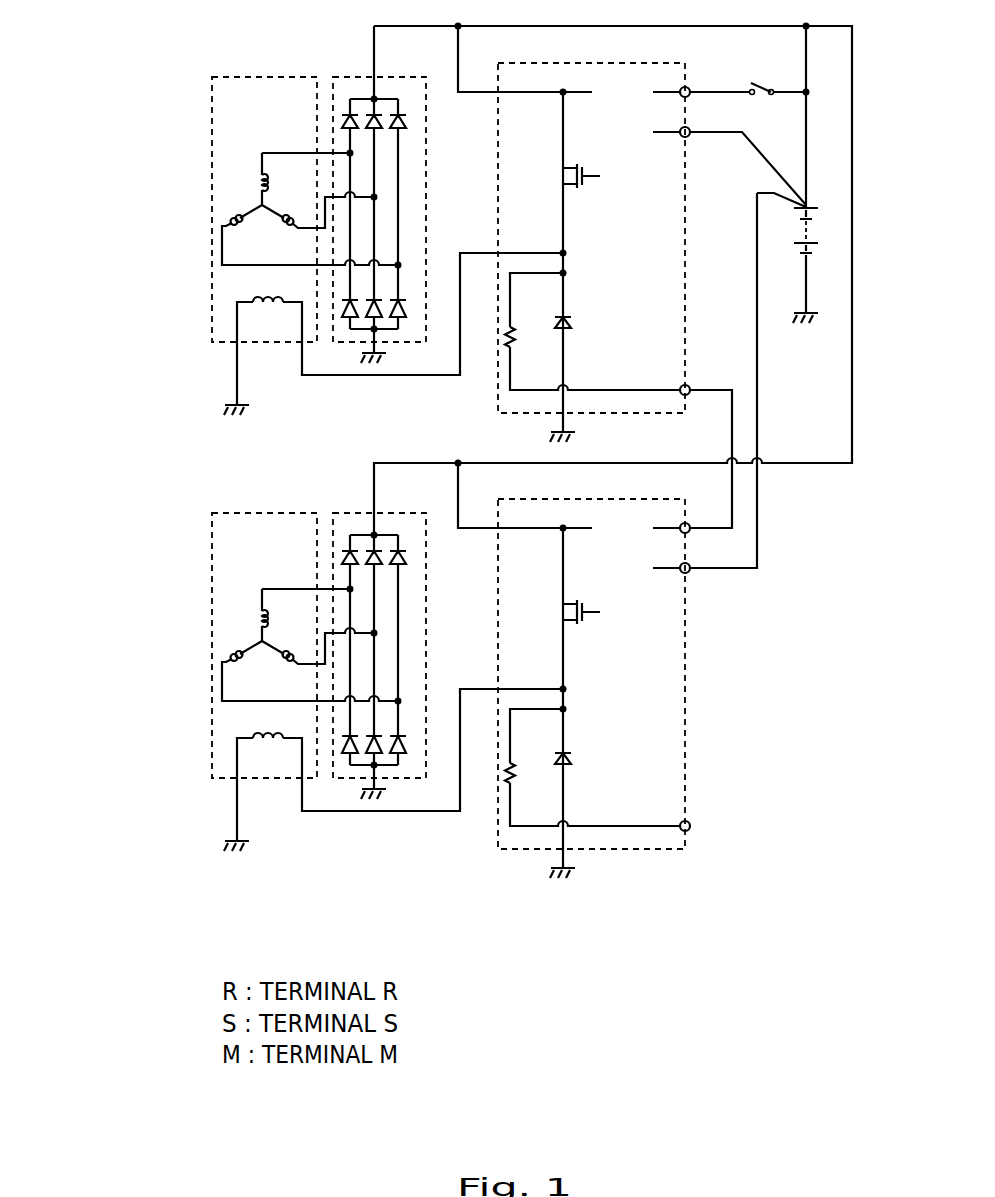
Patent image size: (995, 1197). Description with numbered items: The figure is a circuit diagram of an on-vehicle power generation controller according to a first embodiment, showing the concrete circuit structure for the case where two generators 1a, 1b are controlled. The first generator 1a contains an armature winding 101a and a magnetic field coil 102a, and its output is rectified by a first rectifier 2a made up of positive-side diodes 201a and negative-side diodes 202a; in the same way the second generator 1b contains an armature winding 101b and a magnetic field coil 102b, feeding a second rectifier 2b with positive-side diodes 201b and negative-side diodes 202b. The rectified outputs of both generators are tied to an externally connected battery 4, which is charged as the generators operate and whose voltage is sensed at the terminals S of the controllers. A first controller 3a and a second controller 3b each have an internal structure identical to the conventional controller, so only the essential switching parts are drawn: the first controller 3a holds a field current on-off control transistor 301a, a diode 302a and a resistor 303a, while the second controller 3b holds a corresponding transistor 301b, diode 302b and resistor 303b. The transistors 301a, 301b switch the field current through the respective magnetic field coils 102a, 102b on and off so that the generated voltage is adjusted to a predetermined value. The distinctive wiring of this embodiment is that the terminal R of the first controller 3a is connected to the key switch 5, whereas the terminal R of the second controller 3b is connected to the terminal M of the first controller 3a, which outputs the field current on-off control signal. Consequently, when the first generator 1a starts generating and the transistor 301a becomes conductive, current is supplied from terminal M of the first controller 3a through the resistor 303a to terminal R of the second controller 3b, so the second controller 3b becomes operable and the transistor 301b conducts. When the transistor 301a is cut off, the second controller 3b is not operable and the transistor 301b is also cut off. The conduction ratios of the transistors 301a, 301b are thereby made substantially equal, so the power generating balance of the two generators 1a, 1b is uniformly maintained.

The first generator 1a is at (308, 246).
The armature winding 101a is at (310, 194).
The magnetic field coil 102a is at (393, 334).
The first rectifier 2a is at (405, 200).
The positive-side diodes 201a is at (409, 119).
The negative-side diodes 202a is at (394, 337).
The first controller 3a is at (584, 235).
The field current on-off control transistor 301a is at (554, 173).
The diode 302a is at (588, 311).
The resistor 303a is at (533, 350).
The second generator 1b is at (306, 682).
The armature winding 101b is at (310, 630).
The magnetic field coil 102b is at (393, 770).
The second rectifier 2b is at (405, 636).
The positive-side diodes 201b is at (409, 555).
The negative-side diodes 202b is at (394, 773).
The second controller 3b is at (584, 672).
The field current on-off control transistor 301b is at (554, 609).
The diode 302b is at (591, 761).
The resistor 303b is at (534, 787).
The battery 4 is at (794, 174).
The key switch 5 is at (748, 72).